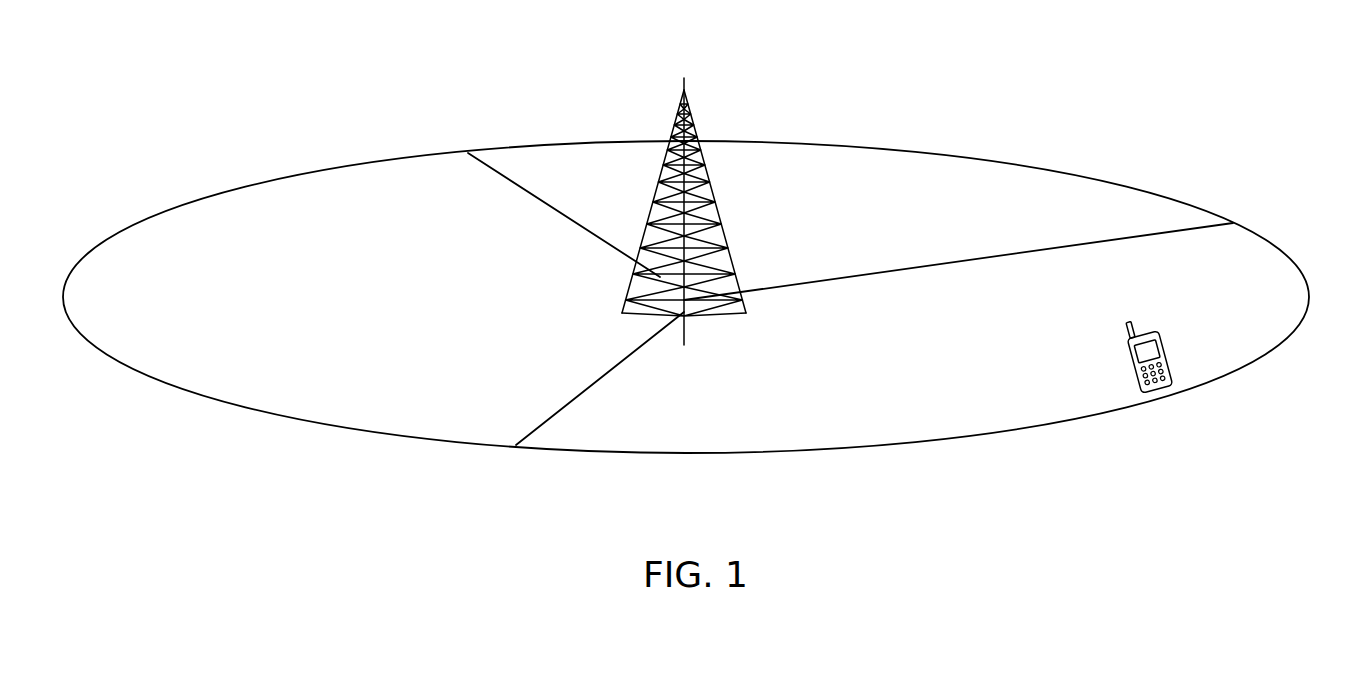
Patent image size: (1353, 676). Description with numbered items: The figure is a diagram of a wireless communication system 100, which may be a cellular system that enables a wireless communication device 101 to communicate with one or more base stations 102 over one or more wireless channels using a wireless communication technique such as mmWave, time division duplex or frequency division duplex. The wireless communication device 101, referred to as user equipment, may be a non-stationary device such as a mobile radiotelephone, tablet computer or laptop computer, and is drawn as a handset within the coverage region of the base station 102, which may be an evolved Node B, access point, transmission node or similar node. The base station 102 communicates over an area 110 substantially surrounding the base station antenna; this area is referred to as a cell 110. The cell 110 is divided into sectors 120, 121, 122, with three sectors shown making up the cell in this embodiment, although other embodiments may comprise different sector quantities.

The wireless communication system 100 is at (686, 266).
The wireless communication device 101 is at (1170, 348).
The base station 102 is at (688, 103).
The cell 110 is at (1240, 222).
The sector 120 is at (318, 195).
The sector 121 is at (870, 173).
The sector 122 is at (918, 405).